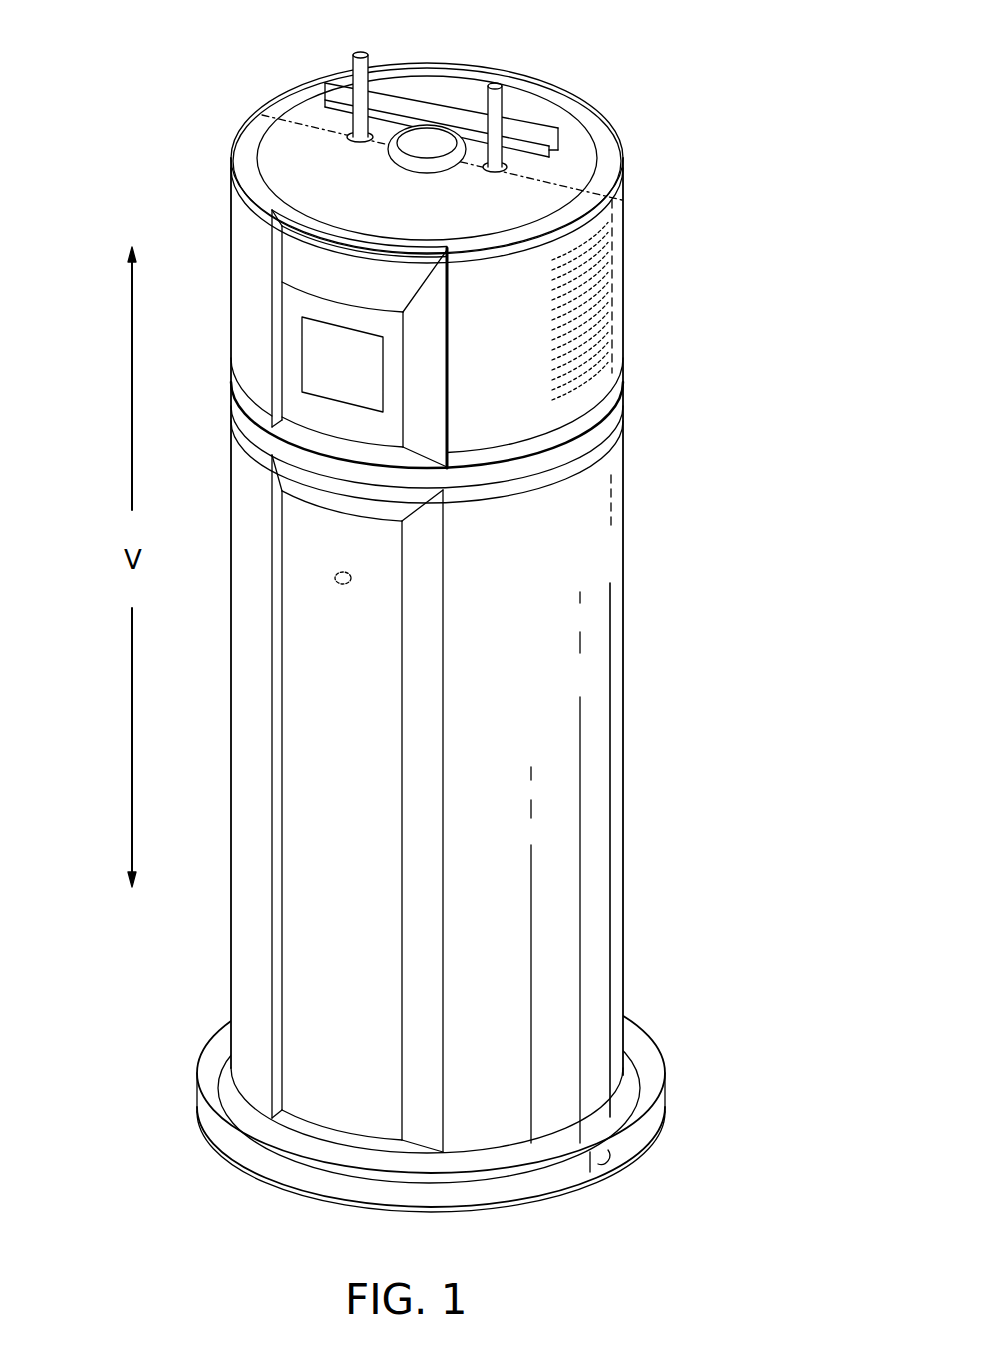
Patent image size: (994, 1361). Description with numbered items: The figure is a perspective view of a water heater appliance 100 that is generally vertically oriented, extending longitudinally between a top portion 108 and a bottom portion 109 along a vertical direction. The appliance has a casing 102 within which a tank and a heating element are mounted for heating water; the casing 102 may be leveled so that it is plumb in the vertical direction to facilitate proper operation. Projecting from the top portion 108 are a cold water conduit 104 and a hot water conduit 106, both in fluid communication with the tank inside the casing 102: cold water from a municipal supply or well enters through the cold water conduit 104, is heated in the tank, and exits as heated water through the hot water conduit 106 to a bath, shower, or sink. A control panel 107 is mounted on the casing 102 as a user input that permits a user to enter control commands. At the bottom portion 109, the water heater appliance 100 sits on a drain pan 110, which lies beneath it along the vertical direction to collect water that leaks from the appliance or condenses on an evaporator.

The water heater appliance 100 is at (495, 589).
The casing 102 is at (595, 560).
The cold water conduit 104 is at (360, 67).
The hot water conduit 106 is at (493, 100).
The control panel 107 is at (352, 362).
The top portion 108 is at (212, 148).
The bottom portion 109 is at (182, 1056).
The drain pan 110 is at (680, 1068).